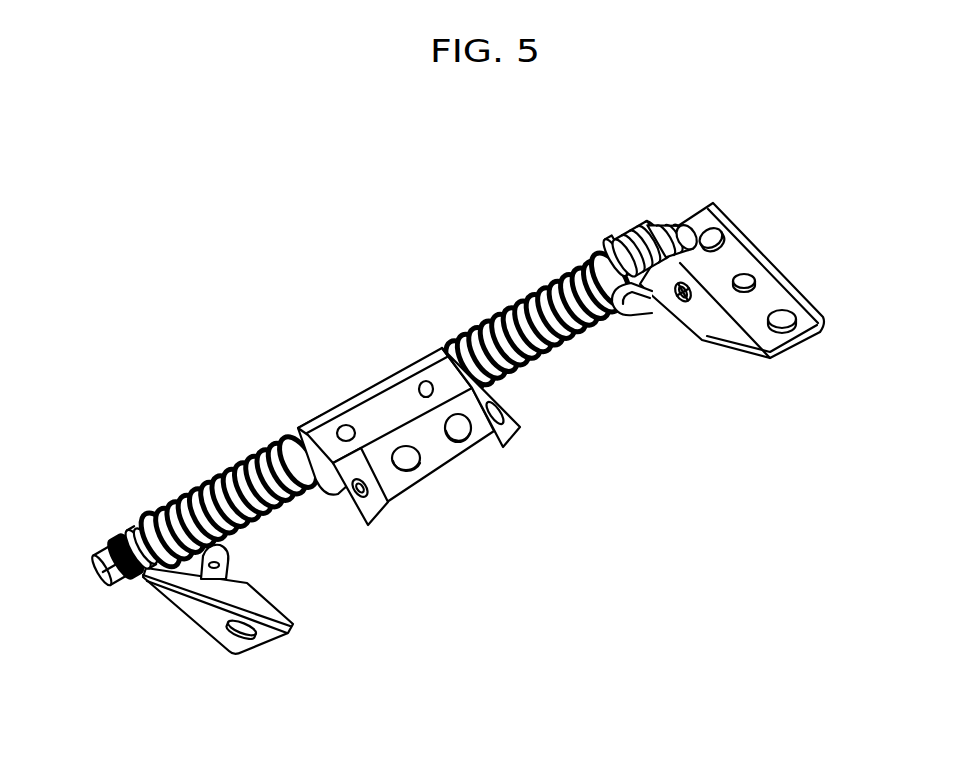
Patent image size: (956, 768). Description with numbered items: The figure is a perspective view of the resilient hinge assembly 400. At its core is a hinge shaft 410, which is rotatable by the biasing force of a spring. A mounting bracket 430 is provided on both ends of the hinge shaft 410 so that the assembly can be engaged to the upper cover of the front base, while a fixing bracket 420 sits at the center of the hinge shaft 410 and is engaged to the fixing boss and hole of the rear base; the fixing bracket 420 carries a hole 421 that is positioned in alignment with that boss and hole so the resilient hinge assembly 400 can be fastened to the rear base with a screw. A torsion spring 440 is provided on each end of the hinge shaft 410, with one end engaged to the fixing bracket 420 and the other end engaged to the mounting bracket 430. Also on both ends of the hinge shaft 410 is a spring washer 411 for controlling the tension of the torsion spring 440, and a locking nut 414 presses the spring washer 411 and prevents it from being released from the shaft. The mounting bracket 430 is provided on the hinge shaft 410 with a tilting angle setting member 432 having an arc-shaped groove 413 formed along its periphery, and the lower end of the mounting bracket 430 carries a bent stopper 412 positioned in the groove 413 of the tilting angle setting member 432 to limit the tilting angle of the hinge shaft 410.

The resilient hinge assembly 400 is at (590, 415).
The hinge shaft 410 is at (437, 319).
The spring washer 411 is at (618, 236).
The bent stopper 412 is at (606, 242).
The arc-shaped groove 413 is at (568, 274).
The locking nut 414 is at (660, 228).
The fixing bracket 420 is at (418, 432).
The hole 421 is at (463, 438).
The mounting bracket 430 is at (765, 248).
The tilting angle setting member 432 is at (628, 290).
The torsion spring 440 is at (205, 483).